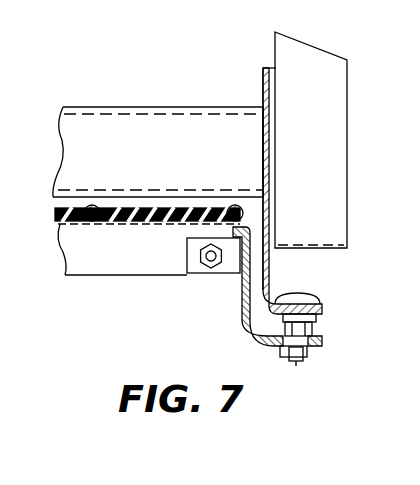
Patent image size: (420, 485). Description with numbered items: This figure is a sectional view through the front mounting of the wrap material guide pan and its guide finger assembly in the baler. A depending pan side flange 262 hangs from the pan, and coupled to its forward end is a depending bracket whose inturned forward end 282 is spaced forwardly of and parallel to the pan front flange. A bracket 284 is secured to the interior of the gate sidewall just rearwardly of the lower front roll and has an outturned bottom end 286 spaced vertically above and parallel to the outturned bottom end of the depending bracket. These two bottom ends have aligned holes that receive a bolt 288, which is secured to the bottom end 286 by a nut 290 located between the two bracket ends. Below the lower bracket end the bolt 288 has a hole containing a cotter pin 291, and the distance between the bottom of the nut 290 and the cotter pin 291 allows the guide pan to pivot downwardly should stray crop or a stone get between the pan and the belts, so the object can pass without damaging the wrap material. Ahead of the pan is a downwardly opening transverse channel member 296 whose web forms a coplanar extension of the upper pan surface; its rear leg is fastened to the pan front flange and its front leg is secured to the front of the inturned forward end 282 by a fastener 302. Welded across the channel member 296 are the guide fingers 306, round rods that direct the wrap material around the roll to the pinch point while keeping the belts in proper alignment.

The pan side flange 262 is at (252, 237).
The inturned forward end 282 is at (230, 274).
The bracket 284 is at (270, 266).
The outturned bottom end 286 is at (318, 302).
The bolt 288 is at (298, 366).
The nut 290 is at (316, 320).
The cotter pin 291 is at (281, 349).
The channel member 296 is at (152, 228).
The fastener 302 is at (203, 266).
The guide finger 306 is at (233, 206).